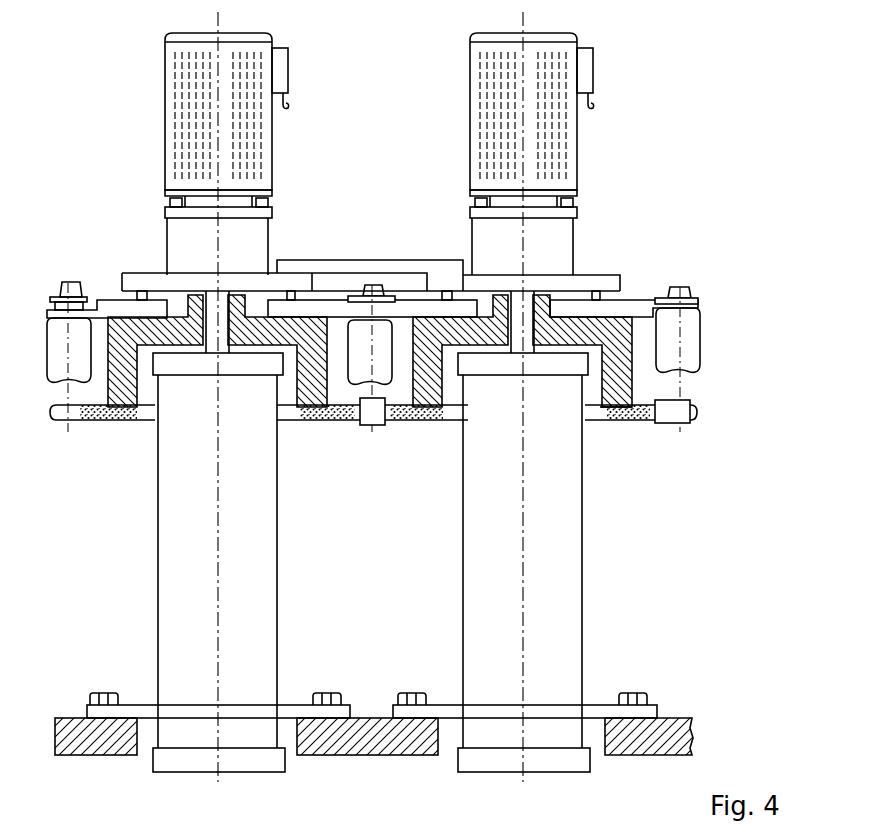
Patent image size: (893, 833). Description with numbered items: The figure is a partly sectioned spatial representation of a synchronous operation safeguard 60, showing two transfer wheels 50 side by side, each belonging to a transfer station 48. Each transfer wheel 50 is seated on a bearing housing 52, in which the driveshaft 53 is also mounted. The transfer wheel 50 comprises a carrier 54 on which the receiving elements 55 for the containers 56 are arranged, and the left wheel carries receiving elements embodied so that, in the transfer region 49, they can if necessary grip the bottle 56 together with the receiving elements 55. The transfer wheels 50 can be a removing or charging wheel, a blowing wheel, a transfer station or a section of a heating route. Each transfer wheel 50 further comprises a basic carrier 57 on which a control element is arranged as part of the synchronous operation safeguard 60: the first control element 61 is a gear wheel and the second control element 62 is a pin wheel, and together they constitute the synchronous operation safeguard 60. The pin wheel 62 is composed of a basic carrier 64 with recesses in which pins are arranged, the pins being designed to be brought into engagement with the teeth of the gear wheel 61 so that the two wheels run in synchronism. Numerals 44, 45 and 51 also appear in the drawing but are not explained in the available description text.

The base plate 44 is at (372, 769).
The anchor bolts 45 is at (368, 763).
The transfer station 48 is at (413, 42).
The transfer region 49 is at (385, 243).
The transfer wheel 50 is at (655, 237).
The drive motor 51 is at (578, 140).
The bearing housing 52 is at (567, 558).
The driveshaft 53 is at (580, 297).
The carrier 54 is at (637, 342).
The receiving elements 55 is at (425, 310).
The container 56 is at (701, 350).
The basic carrier 57 is at (622, 396).
The synchronous operation safeguard 60 is at (393, 472).
The first control element 61 is at (92, 415).
The second control element 62 is at (637, 425).
The basic carrier 64 is at (374, 775).